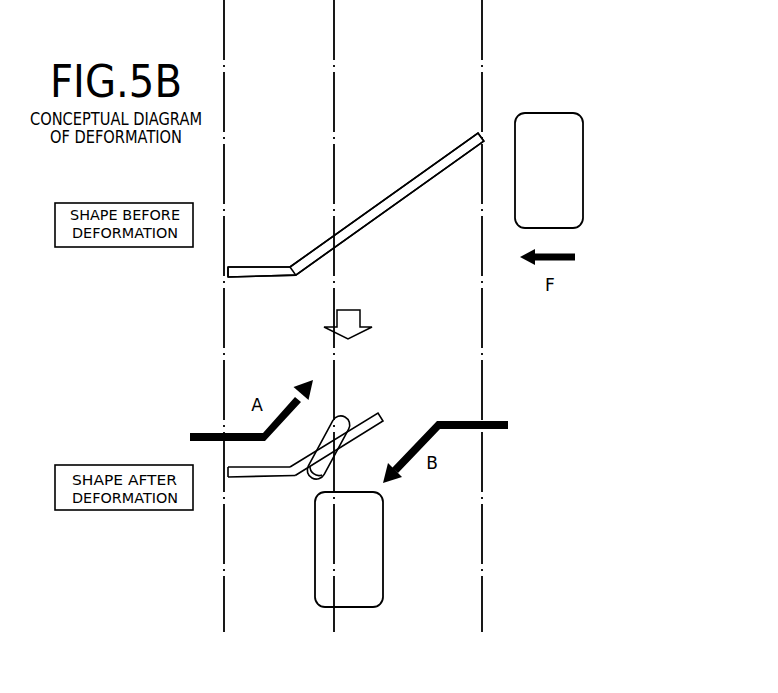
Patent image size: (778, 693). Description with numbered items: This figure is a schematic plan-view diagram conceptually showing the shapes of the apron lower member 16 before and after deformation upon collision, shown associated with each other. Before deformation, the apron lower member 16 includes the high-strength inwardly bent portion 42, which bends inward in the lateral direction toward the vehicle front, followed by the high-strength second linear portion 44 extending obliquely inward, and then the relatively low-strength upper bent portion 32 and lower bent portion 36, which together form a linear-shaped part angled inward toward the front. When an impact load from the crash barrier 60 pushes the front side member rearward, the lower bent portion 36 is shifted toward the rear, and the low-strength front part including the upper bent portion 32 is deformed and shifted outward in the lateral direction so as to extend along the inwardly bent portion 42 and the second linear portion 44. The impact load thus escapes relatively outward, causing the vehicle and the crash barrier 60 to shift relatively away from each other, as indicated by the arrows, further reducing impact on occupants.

The apron lower member 16 is at (317, 166).
The inwardly bent portion 42 is at (290, 277).
The second linear portion 44 is at (315, 257).
The upper bent portion 32 is at (343, 419).
The lower bent portion 36 is at (312, 479).
The crash barrier 60 is at (573, 158).